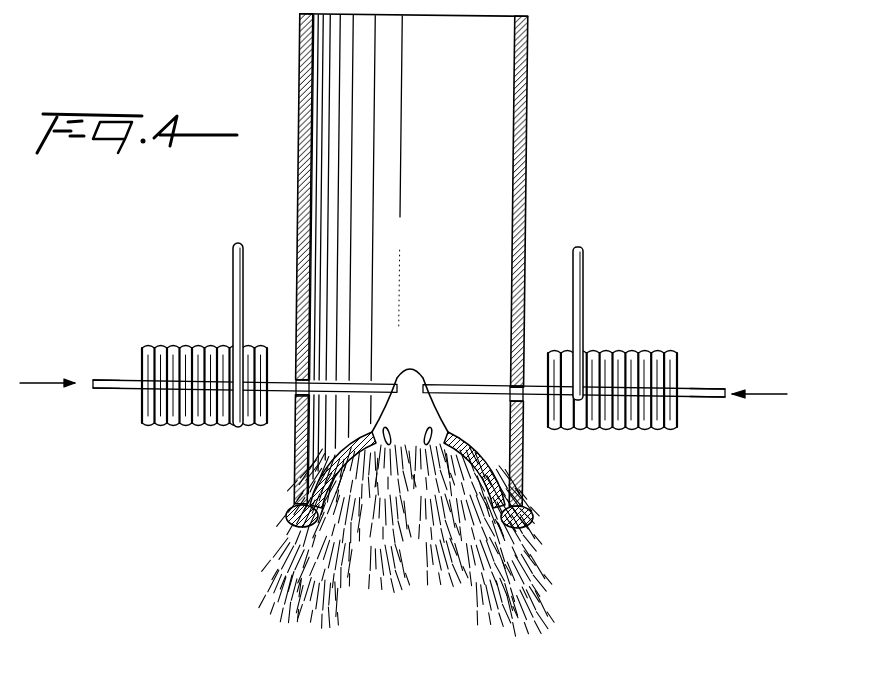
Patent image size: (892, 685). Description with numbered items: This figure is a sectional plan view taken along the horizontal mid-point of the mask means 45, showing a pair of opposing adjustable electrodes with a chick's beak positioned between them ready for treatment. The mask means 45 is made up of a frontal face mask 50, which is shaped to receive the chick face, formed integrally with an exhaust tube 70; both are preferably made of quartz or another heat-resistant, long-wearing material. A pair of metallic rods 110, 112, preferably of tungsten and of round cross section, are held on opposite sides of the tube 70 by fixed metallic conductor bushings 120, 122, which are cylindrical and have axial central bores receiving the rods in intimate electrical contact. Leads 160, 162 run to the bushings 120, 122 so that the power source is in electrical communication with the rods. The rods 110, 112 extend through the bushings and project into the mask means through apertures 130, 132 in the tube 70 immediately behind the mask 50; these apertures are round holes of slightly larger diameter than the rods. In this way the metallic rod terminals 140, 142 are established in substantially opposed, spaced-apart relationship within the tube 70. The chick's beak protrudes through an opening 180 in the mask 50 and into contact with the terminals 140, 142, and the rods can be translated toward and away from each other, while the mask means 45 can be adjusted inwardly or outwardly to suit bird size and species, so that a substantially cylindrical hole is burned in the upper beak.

The exhaust tube 70 is at (528, 131).
The aperture 132 is at (296, 398).
The aperture 130 is at (528, 390).
The metallic rod terminal 142 is at (362, 388).
The metallic rod terminal 140 is at (437, 384).
The metallic rod 112 is at (108, 392).
The metallic rod 110 is at (705, 398).
The opening 180 is at (443, 432).
The frontal face mask 50 is at (485, 468).
The mask means 45 is at (293, 531).
The metallic conductor bushing 122 is at (192, 352).
The lead 162 is at (236, 290).
The metallic conductor bushing 120 is at (648, 365).
The lead 160 is at (586, 293).